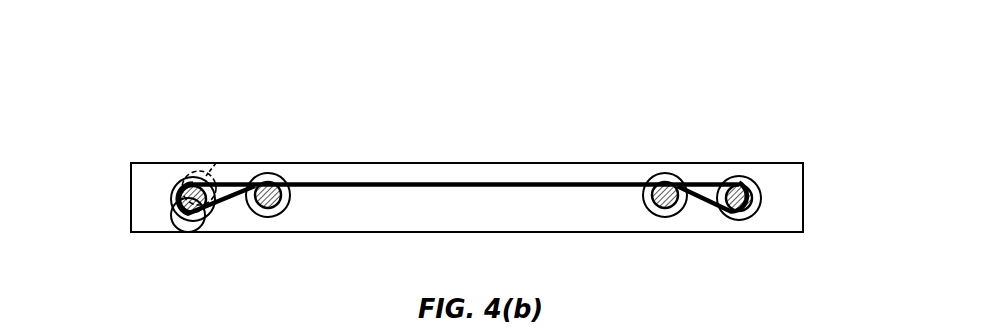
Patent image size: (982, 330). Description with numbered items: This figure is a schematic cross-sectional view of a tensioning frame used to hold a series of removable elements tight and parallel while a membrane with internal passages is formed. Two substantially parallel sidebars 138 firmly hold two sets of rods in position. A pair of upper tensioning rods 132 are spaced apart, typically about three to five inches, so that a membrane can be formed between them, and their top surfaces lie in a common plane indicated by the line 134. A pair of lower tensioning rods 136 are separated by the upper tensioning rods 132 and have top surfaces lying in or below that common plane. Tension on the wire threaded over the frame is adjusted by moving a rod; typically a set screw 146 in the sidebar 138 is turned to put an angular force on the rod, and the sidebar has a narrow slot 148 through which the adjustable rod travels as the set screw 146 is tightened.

The upper tensioning rod 132 is at (289, 207).
The line of common plane 134 is at (500, 184).
The lower tensioning rod 136 is at (210, 218).
The sidebar 138 is at (147, 186).
The set screw 146 is at (215, 166).
The narrow slot 148 is at (171, 216).